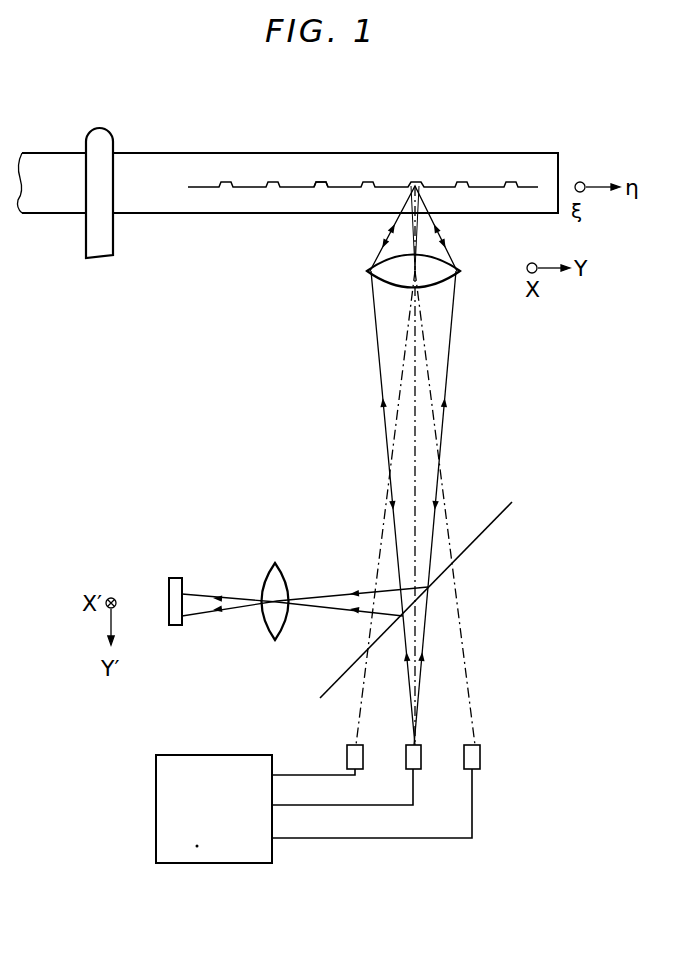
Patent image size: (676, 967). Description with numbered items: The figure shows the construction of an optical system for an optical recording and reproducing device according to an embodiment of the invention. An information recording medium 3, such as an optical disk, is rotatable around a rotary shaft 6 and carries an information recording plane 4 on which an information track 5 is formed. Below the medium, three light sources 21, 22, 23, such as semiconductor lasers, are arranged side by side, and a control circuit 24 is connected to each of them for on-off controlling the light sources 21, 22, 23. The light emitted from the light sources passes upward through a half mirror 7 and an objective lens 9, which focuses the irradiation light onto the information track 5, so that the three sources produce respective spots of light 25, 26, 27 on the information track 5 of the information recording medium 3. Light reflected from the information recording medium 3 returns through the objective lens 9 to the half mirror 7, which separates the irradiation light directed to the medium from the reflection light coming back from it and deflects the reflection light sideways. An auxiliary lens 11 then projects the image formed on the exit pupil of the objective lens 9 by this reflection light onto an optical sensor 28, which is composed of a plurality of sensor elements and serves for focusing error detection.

The information recording medium 3 is at (161, 158).
The information recording plane 4 is at (240, 188).
The information track 5 is at (323, 183).
The rotary shaft 6 is at (106, 134).
The half mirror 7 is at (480, 535).
The objective lens 9 is at (460, 271).
The auxiliary lens 11 is at (273, 563).
The light source 21 is at (347, 752).
The light source 22 is at (406, 757).
The light source 23 is at (480, 752).
The control circuit 24 is at (156, 846).
The spot of light 25 is at (419, 186).
The spot of light 26 is at (414, 180).
The spot of light 27 is at (411, 186).
The optical sensor 28 is at (178, 577).